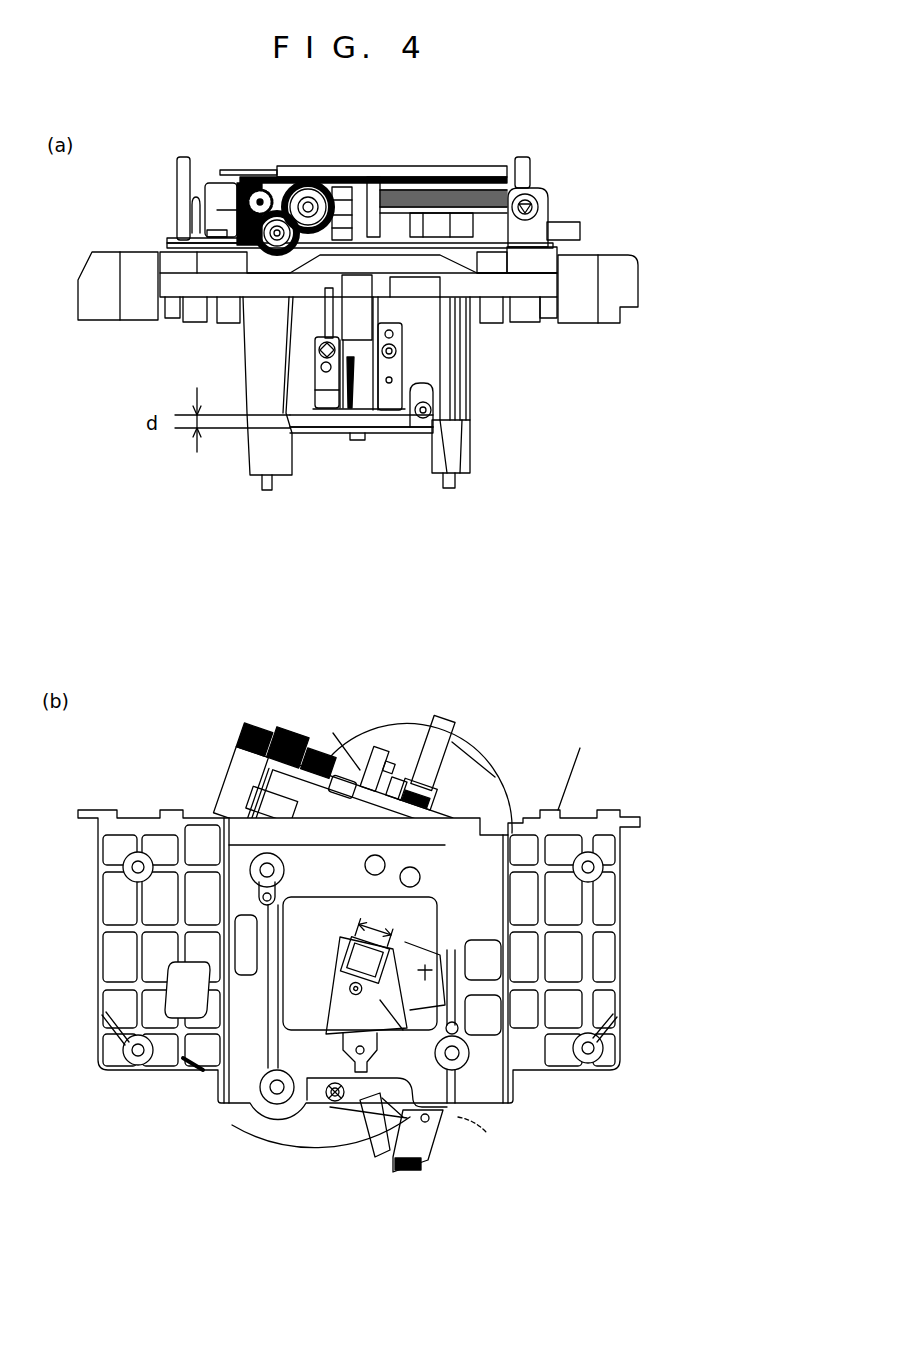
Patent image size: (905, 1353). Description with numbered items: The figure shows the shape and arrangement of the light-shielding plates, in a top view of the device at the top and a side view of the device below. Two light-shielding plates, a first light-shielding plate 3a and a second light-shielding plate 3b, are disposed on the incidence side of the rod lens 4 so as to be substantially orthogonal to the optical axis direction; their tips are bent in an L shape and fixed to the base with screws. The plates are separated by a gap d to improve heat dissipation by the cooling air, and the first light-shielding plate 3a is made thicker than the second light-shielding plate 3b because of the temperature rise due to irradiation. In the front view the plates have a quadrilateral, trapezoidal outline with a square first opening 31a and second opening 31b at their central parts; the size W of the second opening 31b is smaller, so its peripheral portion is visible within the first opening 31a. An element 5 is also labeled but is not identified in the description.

The drive unit 5 is at (398, 168).
The rod lens 4 is at (363, 285).
The first light-shielding plate 3a is at (330, 436).
The second light-shielding plate 3b is at (391, 422).
The first opening 31a is at (358, 967).
The second opening 31b is at (364, 1077).